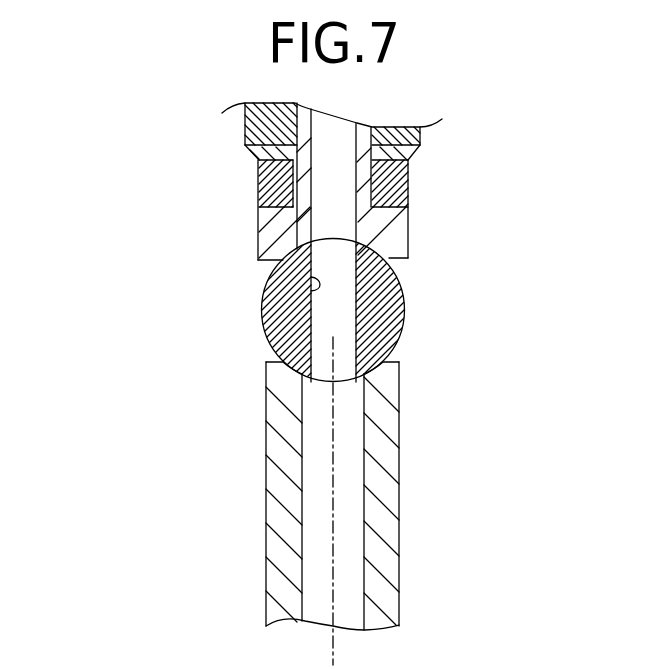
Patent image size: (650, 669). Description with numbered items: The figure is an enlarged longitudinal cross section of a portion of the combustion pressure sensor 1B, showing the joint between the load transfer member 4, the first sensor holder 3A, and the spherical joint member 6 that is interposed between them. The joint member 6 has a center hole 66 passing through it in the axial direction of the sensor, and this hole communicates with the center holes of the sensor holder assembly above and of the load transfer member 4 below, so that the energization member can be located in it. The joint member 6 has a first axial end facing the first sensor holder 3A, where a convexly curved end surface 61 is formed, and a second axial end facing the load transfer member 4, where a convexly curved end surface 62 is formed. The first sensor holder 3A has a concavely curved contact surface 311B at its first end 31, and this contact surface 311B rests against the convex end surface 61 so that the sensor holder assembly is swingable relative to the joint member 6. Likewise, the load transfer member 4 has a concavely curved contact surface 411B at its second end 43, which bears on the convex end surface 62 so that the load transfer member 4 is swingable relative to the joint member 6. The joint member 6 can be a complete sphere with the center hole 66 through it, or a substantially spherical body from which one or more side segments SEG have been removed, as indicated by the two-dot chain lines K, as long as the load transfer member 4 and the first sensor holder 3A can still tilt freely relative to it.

The combustion pressure sensor 1B is at (535, 526).
The first sensor holder 3A is at (390, 236).
The first end 31 is at (155, 275).
The contact surface 311B is at (270, 268).
The joint member 6 is at (386, 330).
The convexly curved end surface 61 is at (397, 273).
The convexly curved end surface 62 is at (393, 388).
The center hole 66 is at (315, 284).
The load transfer member 4 is at (286, 501).
The second end 43 is at (236, 403).
The contact surface 411B is at (266, 364).
The side segment SEG is at (263, 308).
The two-dot chain line K is at (257, 323).